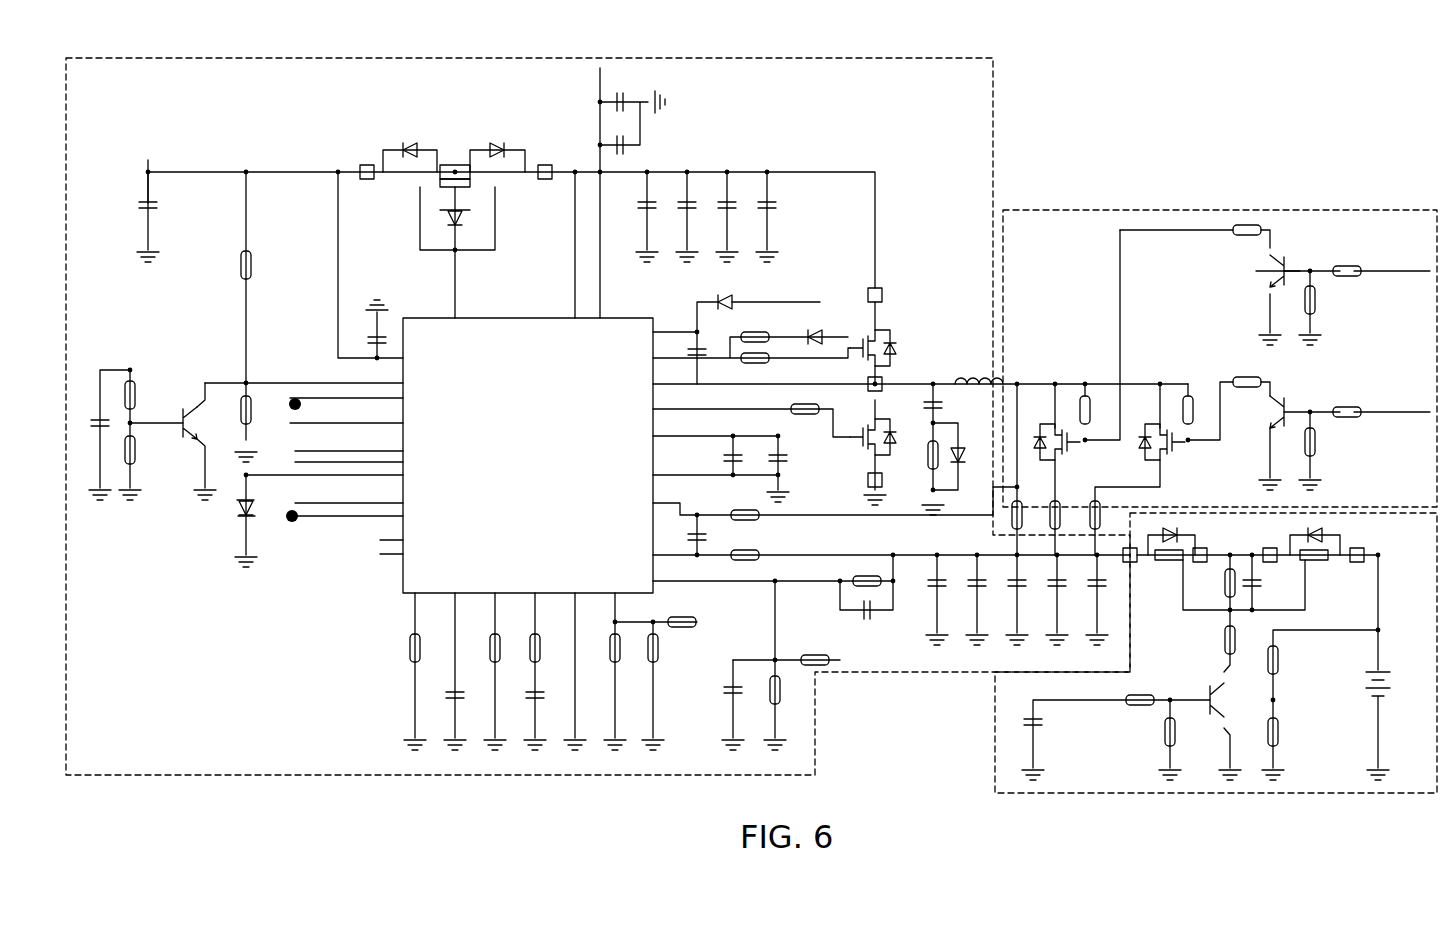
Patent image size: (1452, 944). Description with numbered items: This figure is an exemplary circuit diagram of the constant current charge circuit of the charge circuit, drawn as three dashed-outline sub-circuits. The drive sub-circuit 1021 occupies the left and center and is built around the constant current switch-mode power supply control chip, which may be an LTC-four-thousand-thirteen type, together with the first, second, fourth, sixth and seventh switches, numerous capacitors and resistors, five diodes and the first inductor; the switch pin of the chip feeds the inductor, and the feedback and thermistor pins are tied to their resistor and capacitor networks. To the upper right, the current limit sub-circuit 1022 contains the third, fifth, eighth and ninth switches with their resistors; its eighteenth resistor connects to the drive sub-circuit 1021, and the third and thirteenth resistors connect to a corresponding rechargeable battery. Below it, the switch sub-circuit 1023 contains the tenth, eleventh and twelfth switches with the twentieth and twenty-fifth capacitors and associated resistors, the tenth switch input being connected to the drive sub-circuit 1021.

The drive sub-circuit 1021 is at (993, 150).
The current limit sub-circuit 1022 is at (1222, 210).
The switch sub-circuit 1023 is at (995, 772).